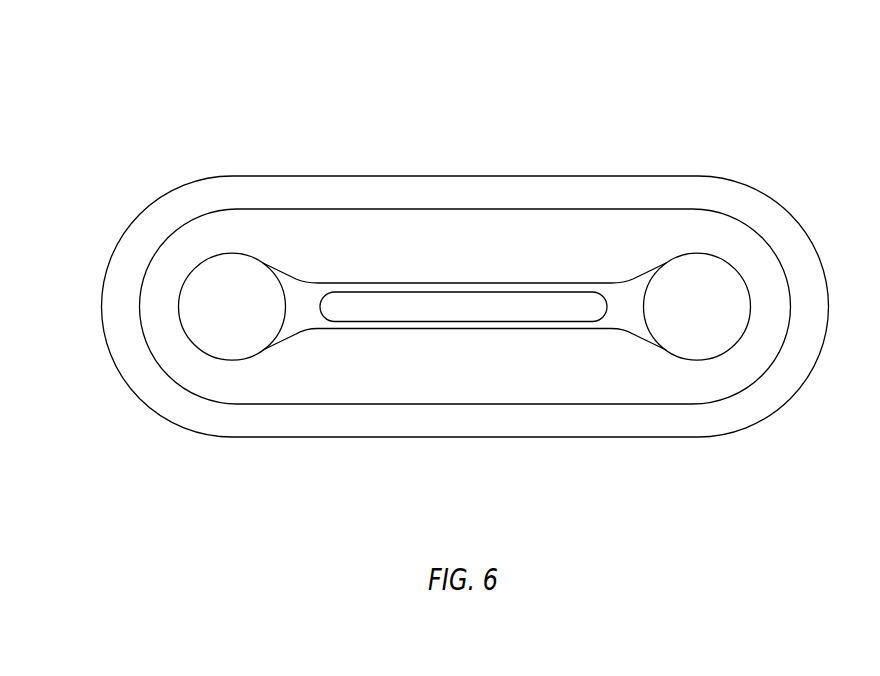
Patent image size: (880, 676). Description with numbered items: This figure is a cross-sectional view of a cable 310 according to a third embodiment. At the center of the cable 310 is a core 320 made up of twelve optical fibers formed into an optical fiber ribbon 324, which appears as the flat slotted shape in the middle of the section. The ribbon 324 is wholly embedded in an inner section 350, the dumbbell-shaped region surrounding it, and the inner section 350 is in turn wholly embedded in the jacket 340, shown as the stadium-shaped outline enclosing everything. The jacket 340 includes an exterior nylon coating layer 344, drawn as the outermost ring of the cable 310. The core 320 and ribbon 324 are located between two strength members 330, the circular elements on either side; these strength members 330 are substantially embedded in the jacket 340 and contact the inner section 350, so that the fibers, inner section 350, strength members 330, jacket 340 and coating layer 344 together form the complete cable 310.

The cable 310 is at (112, 116).
The exterior nylon coating layer 344 is at (401, 197).
The jacket 340 is at (465, 267).
The strength members 330 is at (728, 300).
The inner section 350 is at (296, 323).
The core 320 is at (458, 352).
The optical fiber ribbon 324 is at (533, 316).